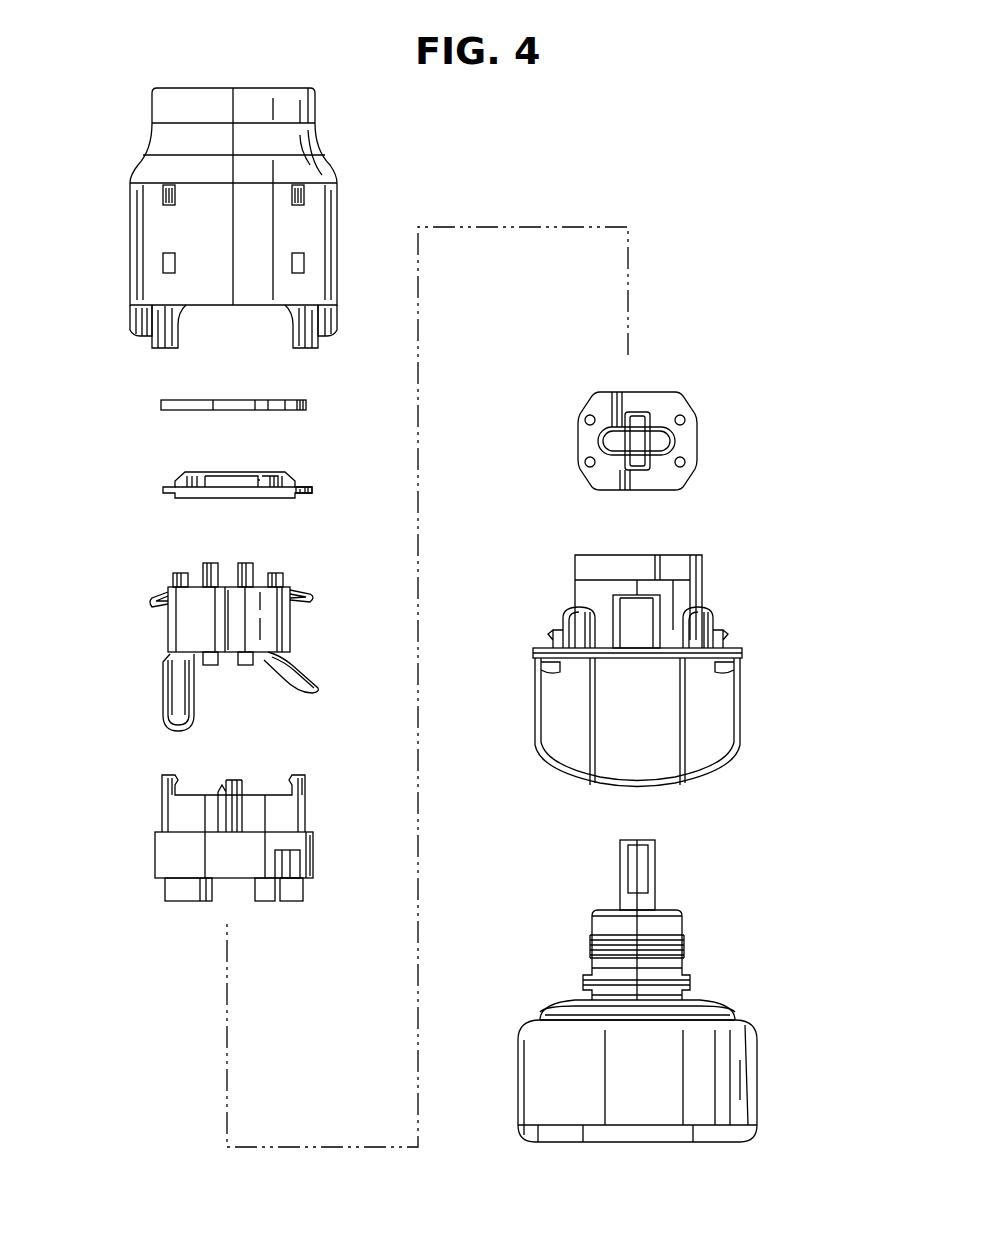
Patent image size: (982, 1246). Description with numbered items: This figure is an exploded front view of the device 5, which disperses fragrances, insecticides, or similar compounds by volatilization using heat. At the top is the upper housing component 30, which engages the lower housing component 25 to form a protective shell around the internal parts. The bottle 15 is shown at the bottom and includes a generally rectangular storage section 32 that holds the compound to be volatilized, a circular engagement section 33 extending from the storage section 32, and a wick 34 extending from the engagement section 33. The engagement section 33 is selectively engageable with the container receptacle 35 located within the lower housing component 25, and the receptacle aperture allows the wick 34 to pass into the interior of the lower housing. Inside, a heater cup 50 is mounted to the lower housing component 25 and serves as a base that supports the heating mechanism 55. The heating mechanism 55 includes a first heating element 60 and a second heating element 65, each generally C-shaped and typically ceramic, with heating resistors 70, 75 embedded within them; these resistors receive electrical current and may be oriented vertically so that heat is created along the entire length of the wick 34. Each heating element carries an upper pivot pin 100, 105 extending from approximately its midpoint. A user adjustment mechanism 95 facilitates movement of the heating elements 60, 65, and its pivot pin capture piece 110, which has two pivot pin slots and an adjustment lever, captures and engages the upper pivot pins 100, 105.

The device 5 is at (92, 42).
The bottle 15 is at (785, 1074).
The lower housing component 25 is at (770, 716).
The upper housing component 30 is at (128, 202).
The storage section 32 is at (758, 1115).
The engagement section 33 is at (683, 935).
The wick 34 is at (657, 877).
The container receptacle 35 is at (702, 566).
The heater cup 50 is at (155, 855).
The heating mechanism 55 is at (107, 577).
The first heating element 60 is at (292, 622).
The second heating element 65 is at (166, 620).
The heating resistor 70 is at (312, 598).
The heating resistor 75 is at (150, 590).
The user adjustment mechanism 95 is at (140, 462).
The upper pivot pin 100 is at (286, 575).
The upper pivot pin 105 is at (170, 578).
The pivot pin capture piece 110 is at (292, 497).